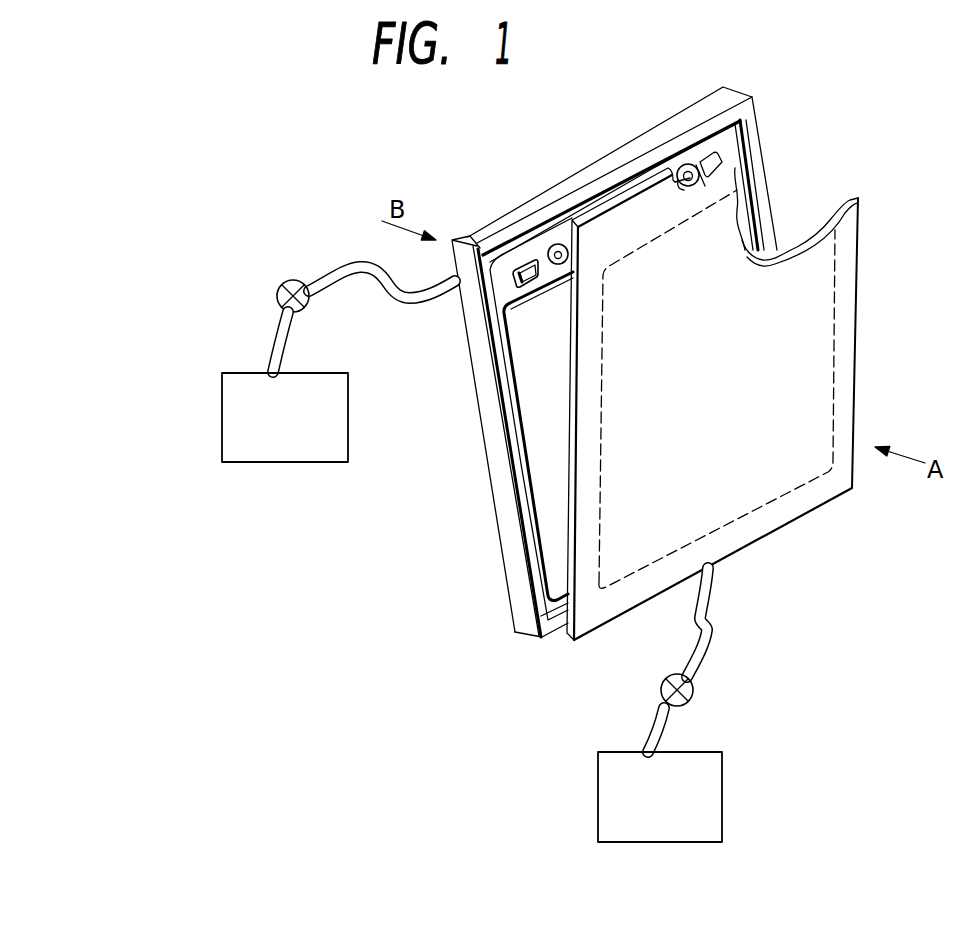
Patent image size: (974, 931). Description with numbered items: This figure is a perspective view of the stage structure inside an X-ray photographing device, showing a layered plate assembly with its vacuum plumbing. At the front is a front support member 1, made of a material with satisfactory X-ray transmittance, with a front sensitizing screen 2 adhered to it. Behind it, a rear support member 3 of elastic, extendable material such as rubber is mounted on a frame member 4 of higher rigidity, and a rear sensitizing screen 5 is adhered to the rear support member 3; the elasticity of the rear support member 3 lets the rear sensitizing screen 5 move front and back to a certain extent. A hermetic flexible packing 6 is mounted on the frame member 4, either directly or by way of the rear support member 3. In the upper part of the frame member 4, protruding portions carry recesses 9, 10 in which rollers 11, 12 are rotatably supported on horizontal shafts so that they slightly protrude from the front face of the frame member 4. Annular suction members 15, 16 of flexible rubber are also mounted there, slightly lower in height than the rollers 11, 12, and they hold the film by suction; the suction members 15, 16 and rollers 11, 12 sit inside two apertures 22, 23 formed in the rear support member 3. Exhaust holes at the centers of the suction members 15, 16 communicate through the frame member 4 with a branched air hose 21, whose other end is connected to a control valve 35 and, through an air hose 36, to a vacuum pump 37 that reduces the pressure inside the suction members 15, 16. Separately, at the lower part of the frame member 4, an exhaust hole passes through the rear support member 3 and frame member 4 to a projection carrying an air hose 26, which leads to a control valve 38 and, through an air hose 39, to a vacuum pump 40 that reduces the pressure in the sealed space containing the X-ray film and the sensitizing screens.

The front support member 1 is at (849, 202).
The front sensitizing screen 2 is at (821, 223).
The rear support member 3 is at (736, 150).
The frame member 4 is at (730, 95).
The rear sensitizing screen 5 is at (620, 208).
The hermetic flexible packing 6 is at (752, 110).
The recess 9 is at (524, 270).
The recess 10 is at (708, 156).
The roller 11 is at (517, 275).
The roller 12 is at (744, 158).
The annular suction member 15 is at (556, 245).
The annular suction member 16 is at (680, 168).
The branched air hose 21 is at (358, 262).
The aperture 22 is at (536, 264).
The aperture 23 is at (690, 168).
The air hose 26 is at (716, 627).
The control valve 35 is at (290, 279).
The air hose 36 is at (276, 330).
The vacuum pump 37 is at (327, 373).
The control valve 38 is at (660, 686).
The air hose 39 is at (645, 722).
The vacuum pump 40 is at (705, 752).